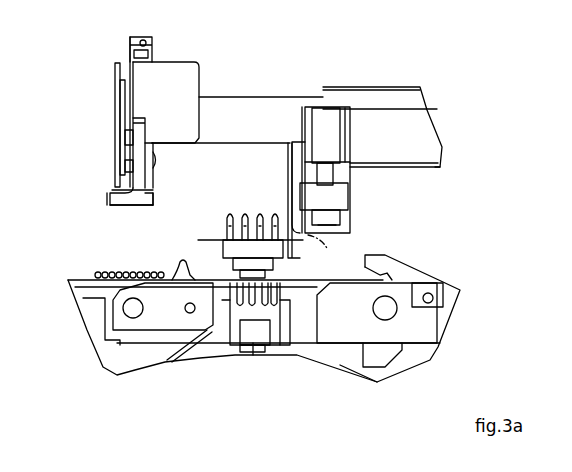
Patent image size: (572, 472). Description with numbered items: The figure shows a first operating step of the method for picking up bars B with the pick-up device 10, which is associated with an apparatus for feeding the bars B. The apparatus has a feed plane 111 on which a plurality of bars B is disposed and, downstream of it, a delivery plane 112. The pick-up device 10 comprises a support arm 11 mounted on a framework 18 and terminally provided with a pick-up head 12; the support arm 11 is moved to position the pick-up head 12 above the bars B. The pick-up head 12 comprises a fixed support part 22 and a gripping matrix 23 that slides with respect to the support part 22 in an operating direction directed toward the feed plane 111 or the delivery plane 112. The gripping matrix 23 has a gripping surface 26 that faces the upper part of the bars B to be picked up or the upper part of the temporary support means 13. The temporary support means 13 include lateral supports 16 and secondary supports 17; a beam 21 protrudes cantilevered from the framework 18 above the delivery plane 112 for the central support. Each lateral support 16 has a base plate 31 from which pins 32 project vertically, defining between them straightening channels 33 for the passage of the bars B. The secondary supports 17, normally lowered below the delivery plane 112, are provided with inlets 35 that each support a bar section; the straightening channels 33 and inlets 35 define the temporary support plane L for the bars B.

The pick-up device 10 is at (392, 58).
The support arm 11 is at (285, 80).
The pick-up head 12 is at (100, 120).
The temporary support means 13 is at (208, 233).
The lateral support 16 is at (214, 254).
The secondary support 17 is at (225, 356).
The framework 18 is at (438, 180).
The beam 21 is at (378, 155).
The fixed support part 22 is at (169, 66).
The gripping matrix 23 is at (102, 174).
The gripping surface 26 is at (108, 212).
The base plate 31 is at (278, 252).
The pin 32 is at (229, 218).
The straightening channel 33 is at (275, 216).
The inlet 35 is at (264, 290).
The feed plane 111 is at (241, 308).
The delivery plane 112 is at (335, 280).
The bar B is at (130, 270).
The temporary support plane L is at (325, 250).